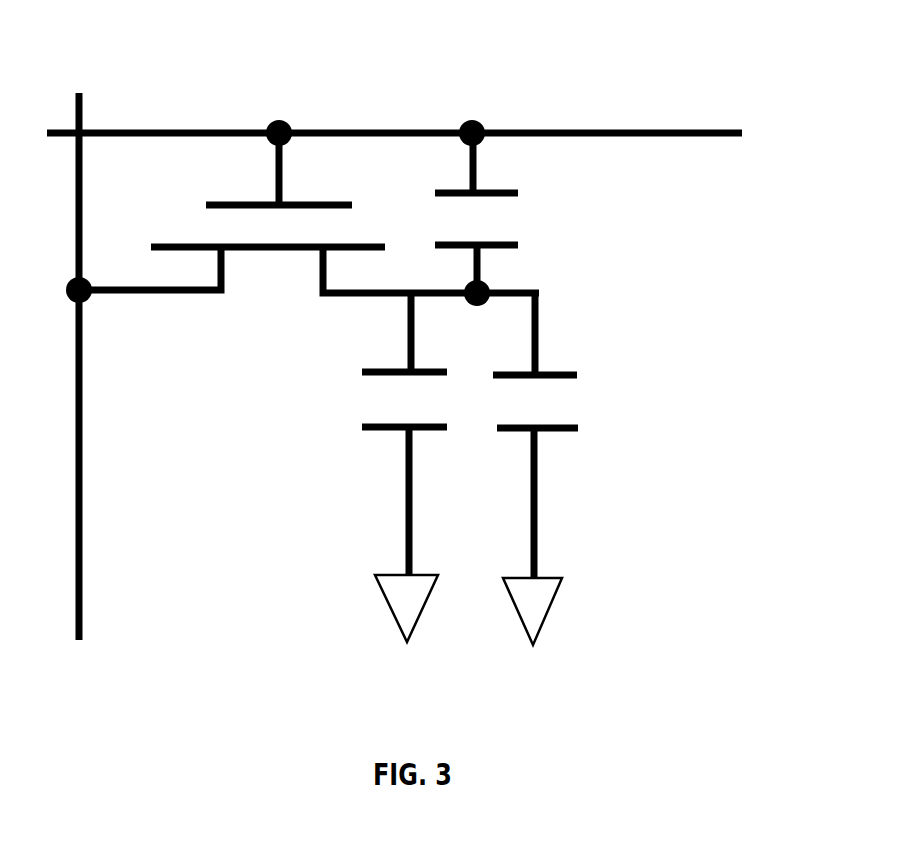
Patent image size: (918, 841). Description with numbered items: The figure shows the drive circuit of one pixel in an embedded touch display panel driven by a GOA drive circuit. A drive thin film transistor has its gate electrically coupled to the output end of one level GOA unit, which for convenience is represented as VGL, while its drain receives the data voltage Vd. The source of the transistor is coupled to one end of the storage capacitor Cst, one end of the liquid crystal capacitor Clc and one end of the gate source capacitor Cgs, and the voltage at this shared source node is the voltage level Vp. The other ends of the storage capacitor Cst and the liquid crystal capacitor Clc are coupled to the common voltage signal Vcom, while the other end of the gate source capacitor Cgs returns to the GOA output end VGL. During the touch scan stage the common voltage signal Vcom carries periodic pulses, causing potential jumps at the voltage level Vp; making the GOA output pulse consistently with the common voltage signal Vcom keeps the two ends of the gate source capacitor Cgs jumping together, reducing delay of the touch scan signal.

The output end G(n) of one level GOA unit VGL is at (394, 106).
The data voltage Vd is at (119, 366).
The gate source capacitor Cgs is at (526, 206).
The voltage level of the source-side capacitor ends Vp is at (547, 297).
The storage capacitor Cst is at (367, 434).
The liquid crystal capacitor Clc is at (569, 435).
The common voltage signal Vcom is at (449, 613).